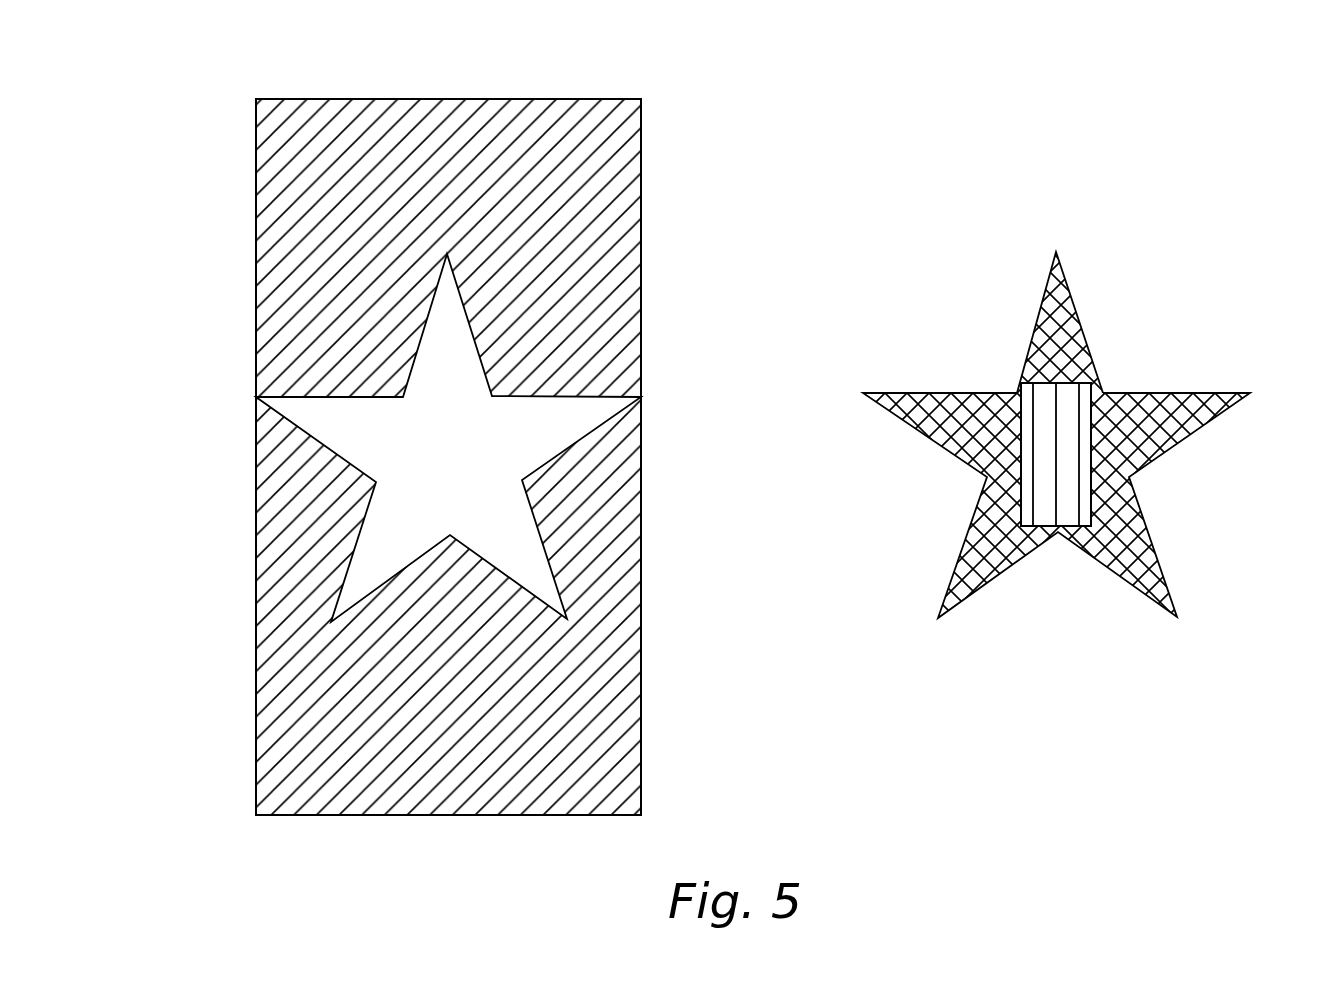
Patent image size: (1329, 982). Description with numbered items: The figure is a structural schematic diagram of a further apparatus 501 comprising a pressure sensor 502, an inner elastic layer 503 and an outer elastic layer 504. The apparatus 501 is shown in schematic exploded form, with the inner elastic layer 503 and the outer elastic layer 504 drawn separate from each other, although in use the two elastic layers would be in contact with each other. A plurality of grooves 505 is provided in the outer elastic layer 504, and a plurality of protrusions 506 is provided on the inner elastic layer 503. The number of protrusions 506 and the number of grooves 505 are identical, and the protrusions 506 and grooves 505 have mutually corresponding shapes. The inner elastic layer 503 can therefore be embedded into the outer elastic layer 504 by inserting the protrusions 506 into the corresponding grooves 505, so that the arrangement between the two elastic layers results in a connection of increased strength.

The apparatus 501 is at (1089, 326).
The pressure sensor 502 is at (1045, 400).
The inner elastic layer 503 is at (1103, 392).
The outer elastic layer 504 is at (575, 179).
The grooves 505 is at (478, 347).
The protrusions 506 is at (1055, 251).